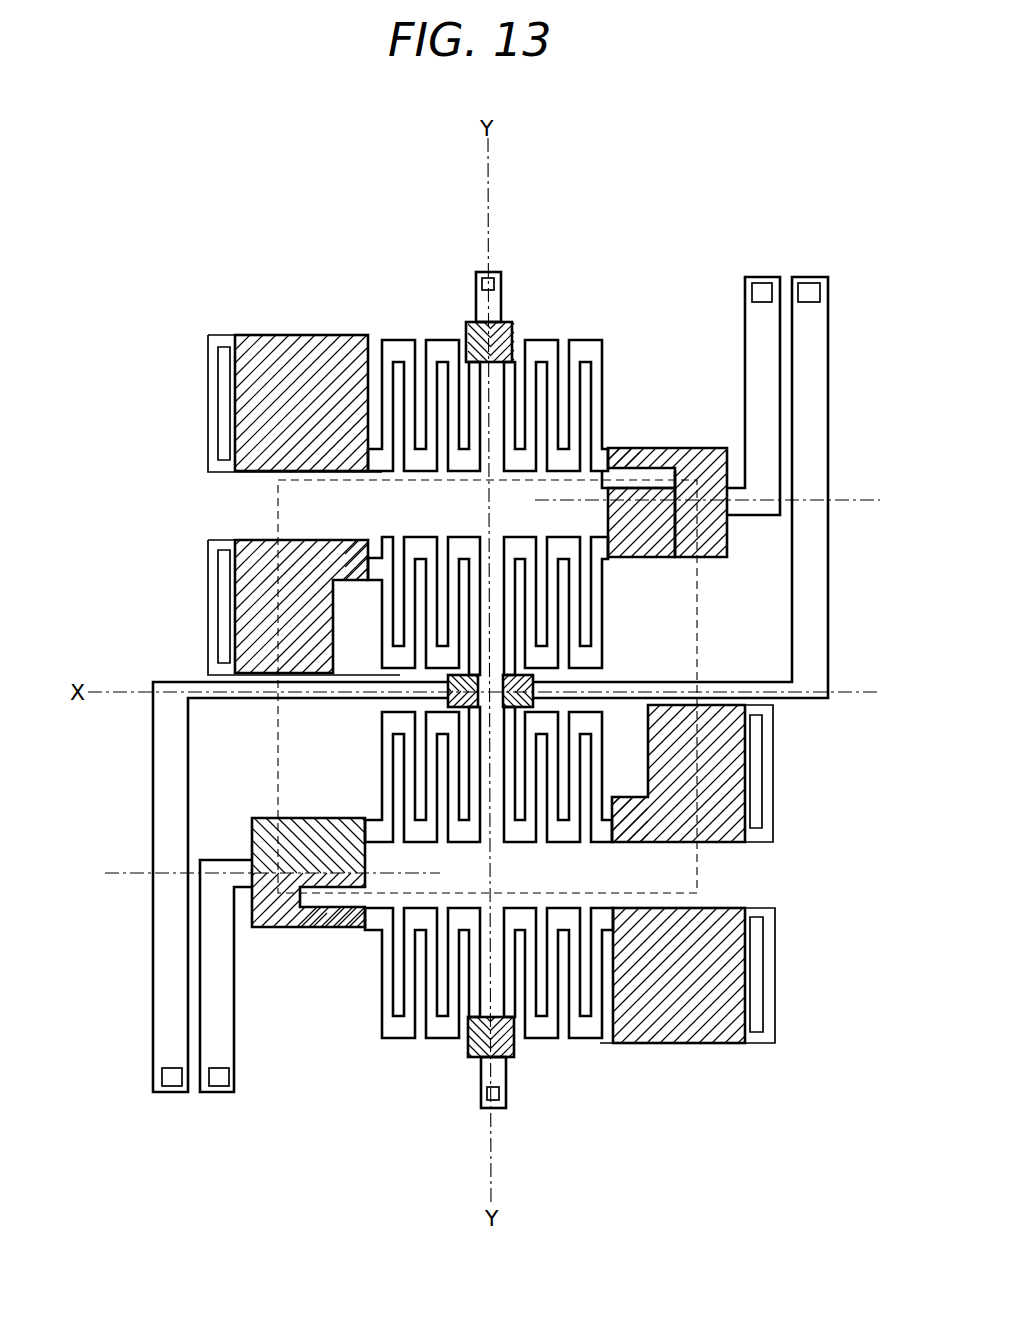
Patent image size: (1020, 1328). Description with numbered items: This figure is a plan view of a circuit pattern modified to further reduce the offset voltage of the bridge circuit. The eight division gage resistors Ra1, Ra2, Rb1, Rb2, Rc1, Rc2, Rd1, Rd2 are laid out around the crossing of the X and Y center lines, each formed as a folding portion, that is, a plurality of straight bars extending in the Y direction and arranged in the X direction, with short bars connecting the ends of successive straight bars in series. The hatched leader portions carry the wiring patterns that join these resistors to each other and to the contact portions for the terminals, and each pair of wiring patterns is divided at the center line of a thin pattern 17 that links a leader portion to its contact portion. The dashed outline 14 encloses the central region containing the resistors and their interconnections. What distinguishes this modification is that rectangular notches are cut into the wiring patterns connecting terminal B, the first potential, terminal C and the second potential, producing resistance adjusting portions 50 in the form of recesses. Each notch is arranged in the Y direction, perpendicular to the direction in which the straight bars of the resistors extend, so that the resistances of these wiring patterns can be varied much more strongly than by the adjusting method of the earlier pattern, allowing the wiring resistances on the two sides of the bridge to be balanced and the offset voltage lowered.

The sensor chip 14 is at (700, 875).
The thin pattern 17 is at (498, 300).
The resistance adjusting portion 50 is at (630, 455).
The division gage resistor Ra1 is at (542, 836).
The division gage resistor Ra2 is at (516, 547).
The division gage resistor Rb1 is at (545, 345).
The division gage resistor Rb2 is at (442, 348).
The division gage resistor Rc1 is at (576, 1034).
The division gage resistor Rc2 is at (444, 1036).
The division gage resistor Rd1 is at (458, 836).
The division gage resistor Rd2 is at (412, 547).